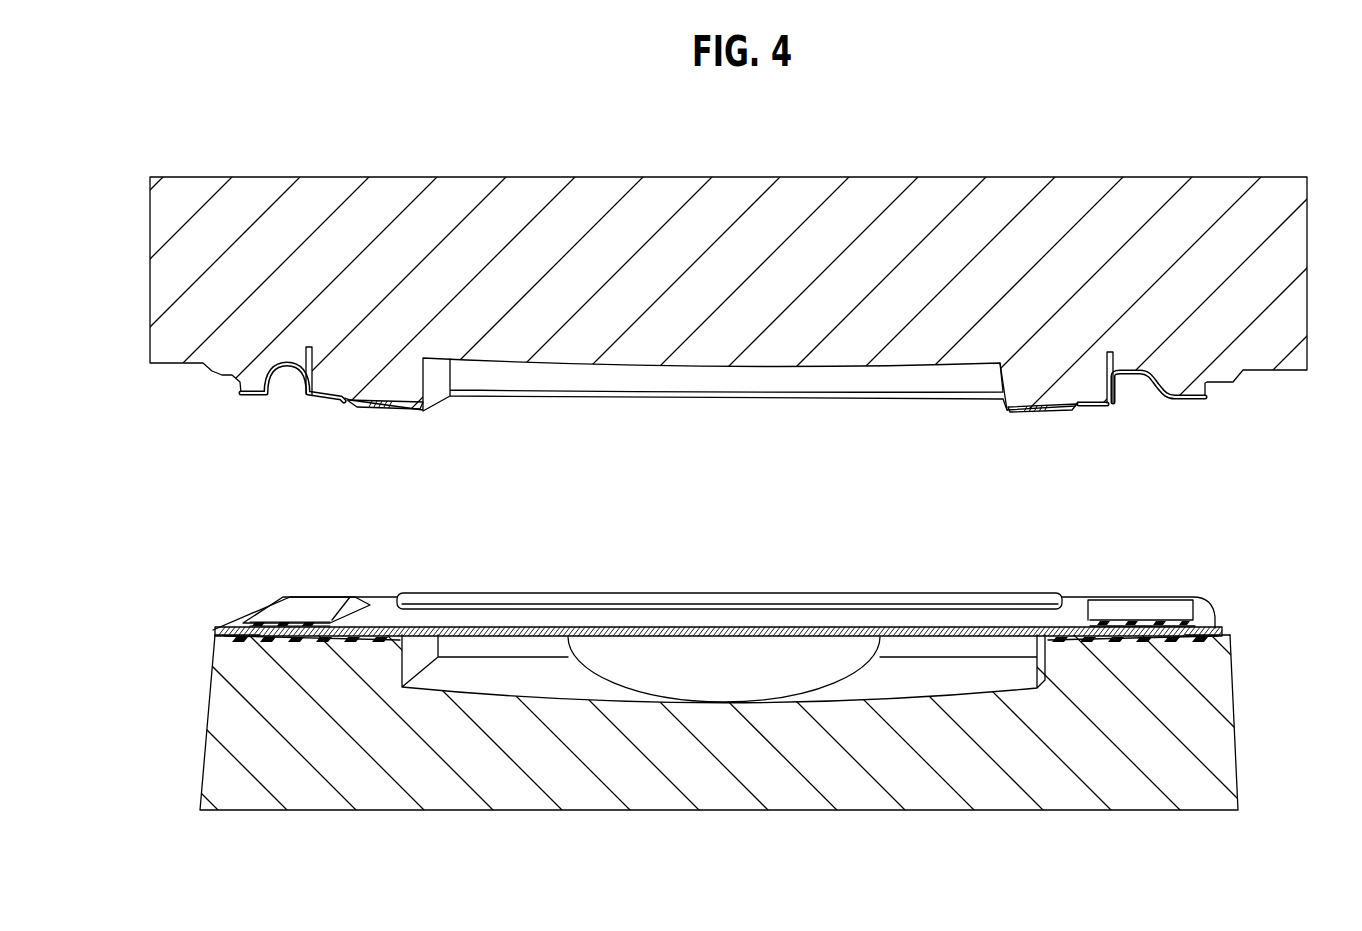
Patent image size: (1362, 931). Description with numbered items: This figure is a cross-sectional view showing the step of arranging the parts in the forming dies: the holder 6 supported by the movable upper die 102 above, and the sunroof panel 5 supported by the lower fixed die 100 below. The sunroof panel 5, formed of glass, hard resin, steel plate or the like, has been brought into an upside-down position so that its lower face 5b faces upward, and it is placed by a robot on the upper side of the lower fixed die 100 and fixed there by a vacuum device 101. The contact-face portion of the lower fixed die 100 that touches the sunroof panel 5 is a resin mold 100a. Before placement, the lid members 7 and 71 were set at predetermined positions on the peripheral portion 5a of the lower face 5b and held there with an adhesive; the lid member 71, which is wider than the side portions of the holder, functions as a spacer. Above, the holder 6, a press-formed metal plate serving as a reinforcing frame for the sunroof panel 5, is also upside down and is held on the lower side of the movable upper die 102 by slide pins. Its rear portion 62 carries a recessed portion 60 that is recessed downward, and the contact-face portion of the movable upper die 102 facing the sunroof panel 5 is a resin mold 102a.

The movable upper die 102 is at (870, 193).
The resin mold 102a is at (385, 411).
The recessed portion 60 is at (283, 416).
The rear portion 62 is at (316, 400).
The holder 6 is at (716, 403).
The sunroof panel 5 is at (388, 605).
The peripheral portion 5a is at (265, 576).
The lower face 5b is at (425, 620).
The lid member 7 is at (322, 607).
The lid member 71 is at (790, 599).
The lower fixed die 100 is at (861, 795).
The resin mold 100a is at (246, 630).
The vacuum device 101 is at (715, 683).